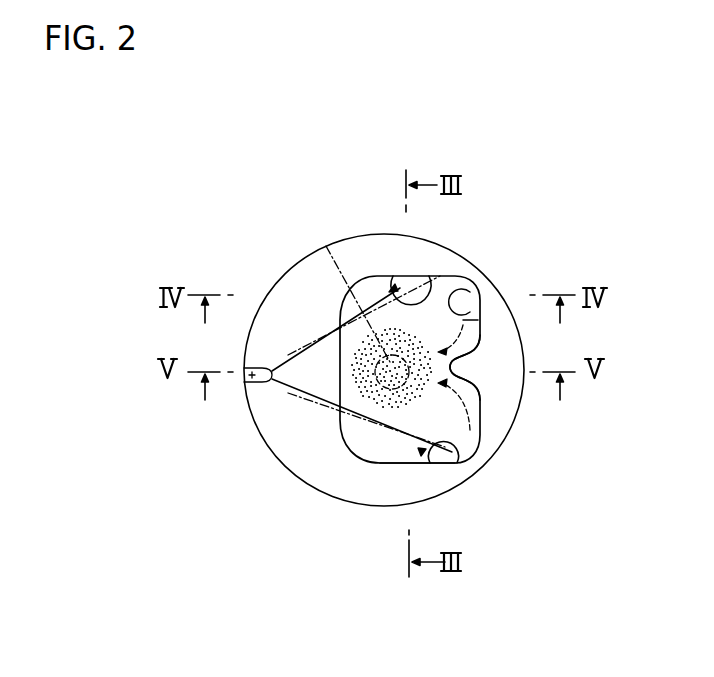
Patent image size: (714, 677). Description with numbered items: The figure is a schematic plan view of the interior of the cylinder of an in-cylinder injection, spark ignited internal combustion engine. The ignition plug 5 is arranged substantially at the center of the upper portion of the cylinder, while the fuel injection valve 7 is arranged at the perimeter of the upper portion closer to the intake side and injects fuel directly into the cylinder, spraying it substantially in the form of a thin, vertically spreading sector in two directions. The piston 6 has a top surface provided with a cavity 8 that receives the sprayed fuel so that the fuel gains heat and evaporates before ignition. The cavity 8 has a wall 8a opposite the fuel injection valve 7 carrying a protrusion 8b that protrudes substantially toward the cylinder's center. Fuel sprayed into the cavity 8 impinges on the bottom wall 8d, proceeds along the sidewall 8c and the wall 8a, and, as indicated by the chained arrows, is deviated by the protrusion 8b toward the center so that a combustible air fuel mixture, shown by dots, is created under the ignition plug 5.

The ignition plug 5 is at (326, 246).
The piston 6 is at (292, 294).
The fuel injection valve 7 is at (254, 382).
The cavity 8 is at (336, 442).
The wall 8a is at (452, 292).
The protrusion 8b is at (465, 366).
The sidewall 8c is at (436, 290).
The bottom wall 8d is at (385, 444).